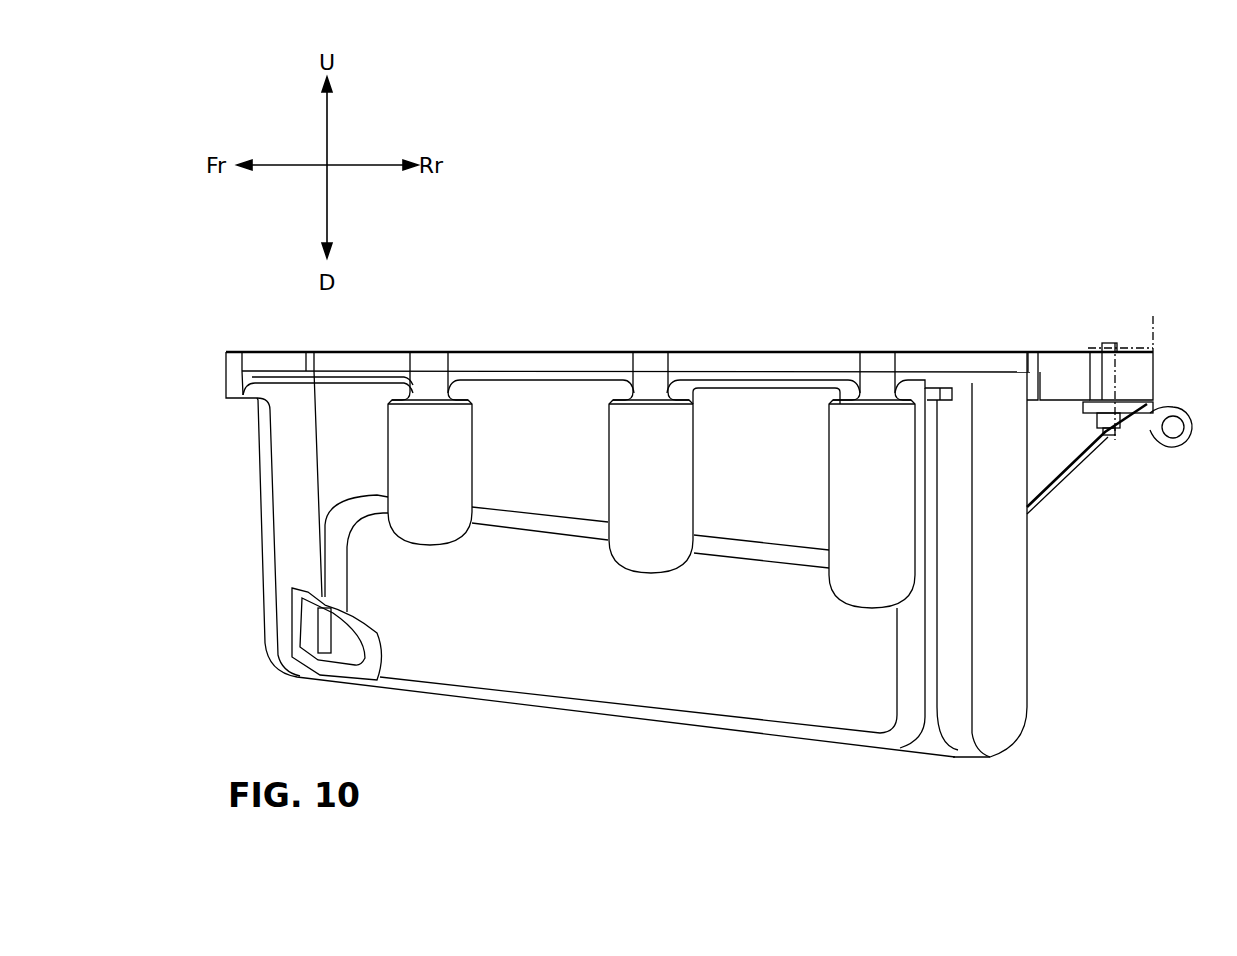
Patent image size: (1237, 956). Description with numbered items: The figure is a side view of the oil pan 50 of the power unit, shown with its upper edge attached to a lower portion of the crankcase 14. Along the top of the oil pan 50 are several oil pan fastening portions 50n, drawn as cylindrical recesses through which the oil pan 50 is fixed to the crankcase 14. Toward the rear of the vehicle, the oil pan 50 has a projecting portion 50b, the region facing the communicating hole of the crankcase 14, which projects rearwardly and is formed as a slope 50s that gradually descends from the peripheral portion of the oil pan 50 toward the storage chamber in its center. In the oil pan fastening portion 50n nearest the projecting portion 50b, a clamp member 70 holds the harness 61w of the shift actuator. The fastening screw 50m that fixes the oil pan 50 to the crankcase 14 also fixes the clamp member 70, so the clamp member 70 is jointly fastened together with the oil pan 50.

The oil pan 50 is at (785, 305).
The oil pan fastening portion 50n is at (433, 355).
The projecting portion 50b is at (1068, 368).
The crankcase 14 is at (1153, 337).
The fastening screw 50m is at (1107, 437).
The slope 50s is at (1068, 443).
The clamp member 70 is at (1170, 458).
The harness 61w is at (1180, 435).